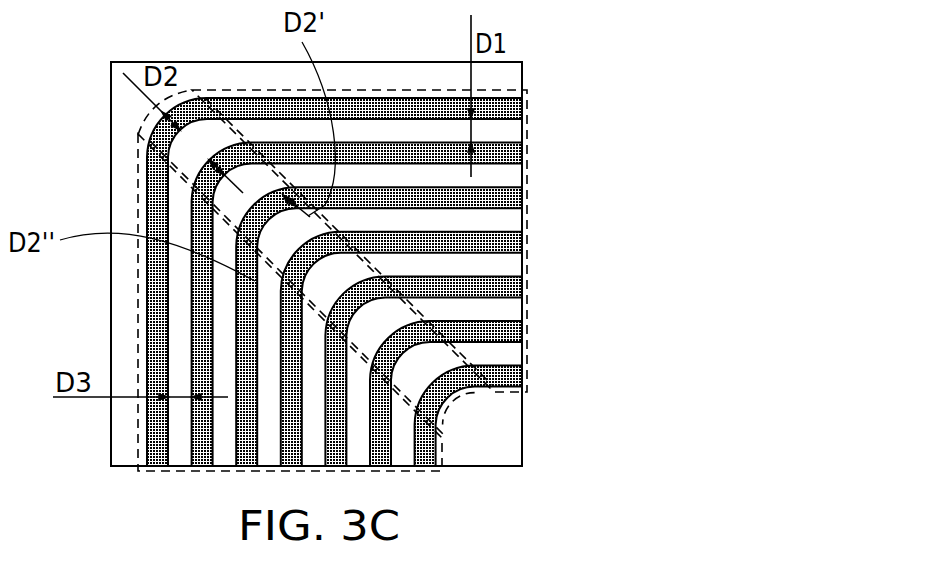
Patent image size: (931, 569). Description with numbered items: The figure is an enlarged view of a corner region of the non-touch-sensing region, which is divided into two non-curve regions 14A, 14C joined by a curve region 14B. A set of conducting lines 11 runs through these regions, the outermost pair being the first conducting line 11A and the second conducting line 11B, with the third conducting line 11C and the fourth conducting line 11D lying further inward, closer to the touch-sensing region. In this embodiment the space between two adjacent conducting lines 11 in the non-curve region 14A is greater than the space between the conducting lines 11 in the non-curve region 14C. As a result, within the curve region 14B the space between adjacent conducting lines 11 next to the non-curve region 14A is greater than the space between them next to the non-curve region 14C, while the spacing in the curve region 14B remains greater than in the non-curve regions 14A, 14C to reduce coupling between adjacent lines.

The first conducting line 11A is at (515, 108).
The second conducting line 11B is at (515, 153).
The third conducting line 11C is at (515, 197).
The fourth conducting line 11D is at (515, 242).
The conducting lines 11 is at (515, 286).
The non-curve region 14A is at (418, 90).
The curve region 14B is at (138, 124).
The non-curve region 14C is at (138, 310).